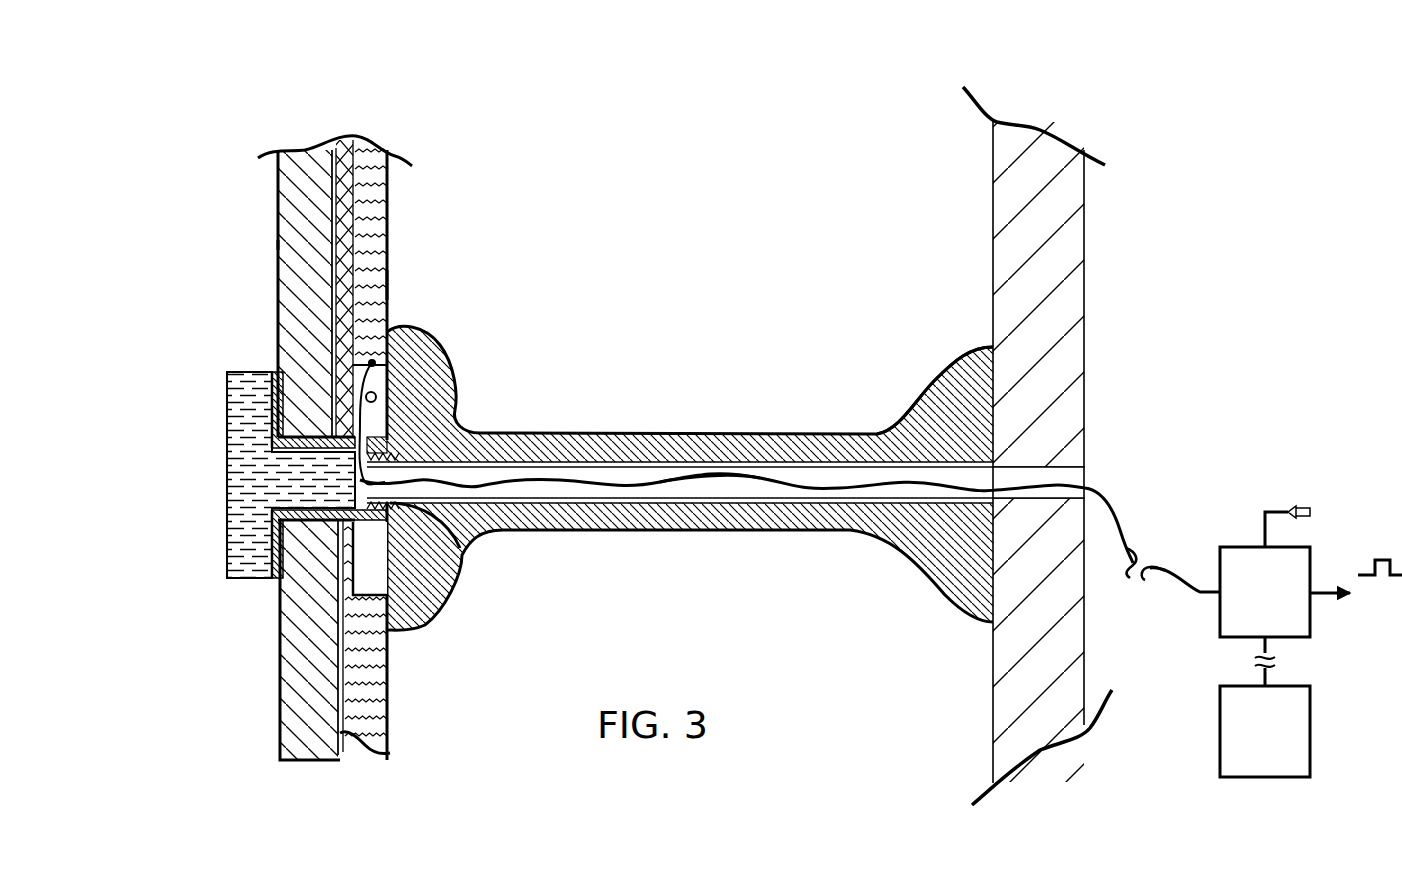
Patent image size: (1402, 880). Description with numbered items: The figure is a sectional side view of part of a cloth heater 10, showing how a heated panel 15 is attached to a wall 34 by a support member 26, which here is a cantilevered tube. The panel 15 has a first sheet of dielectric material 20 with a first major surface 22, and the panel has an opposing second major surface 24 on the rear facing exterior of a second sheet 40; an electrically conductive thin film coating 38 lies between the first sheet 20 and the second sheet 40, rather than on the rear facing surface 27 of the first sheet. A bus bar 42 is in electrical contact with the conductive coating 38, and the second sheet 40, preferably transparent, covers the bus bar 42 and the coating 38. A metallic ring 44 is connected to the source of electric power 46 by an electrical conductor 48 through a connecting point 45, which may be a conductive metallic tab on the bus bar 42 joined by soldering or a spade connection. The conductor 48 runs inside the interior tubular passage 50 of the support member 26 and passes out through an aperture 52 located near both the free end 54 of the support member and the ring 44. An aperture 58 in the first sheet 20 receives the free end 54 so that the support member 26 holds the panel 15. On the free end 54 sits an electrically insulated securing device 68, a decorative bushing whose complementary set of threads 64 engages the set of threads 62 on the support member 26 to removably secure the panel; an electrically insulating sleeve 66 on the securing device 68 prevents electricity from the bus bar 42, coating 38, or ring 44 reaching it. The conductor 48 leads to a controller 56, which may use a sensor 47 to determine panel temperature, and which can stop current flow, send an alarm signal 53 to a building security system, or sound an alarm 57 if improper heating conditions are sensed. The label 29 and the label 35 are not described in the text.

The cloth heater 10 is at (720, 128).
The heated panel 15 is at (238, 133).
The first sheet of dielectric material 20 is at (296, 188).
The first major surface 22 is at (278, 245).
The second major surface 24 is at (388, 290).
The support member 26 is at (668, 396).
The rear facing surface 27 is at (350, 732).
The fillet 29 is at (947, 385).
The wall 34 is at (1068, 256).
The probe 35 is at (527, 298).
The electrically conductive thin film coating 38 is at (334, 228).
The second sheet 40 is at (378, 195).
The bus bar 42 is at (347, 246).
The metallic ring 44 is at (388, 380).
The connecting point 45 is at (377, 400).
The source of electric power 46 is at (1265, 707).
The sensor 47 is at (378, 371).
The electrical conductor 48 is at (1100, 513).
The interior tubular passage 50 is at (730, 487).
The aperture 52 is at (358, 453).
The alarm signal 53 is at (1356, 582).
The free end 54 is at (433, 652).
The controller 56 is at (1265, 592).
The alarm 57 is at (1291, 512).
The aperture 58 is at (292, 440).
The set of threads 62 is at (400, 458).
The complementary set of threads 64 is at (372, 570).
The electrically insulating sleeve 66 is at (277, 372).
The electrically insulated securing device 68 is at (233, 414).